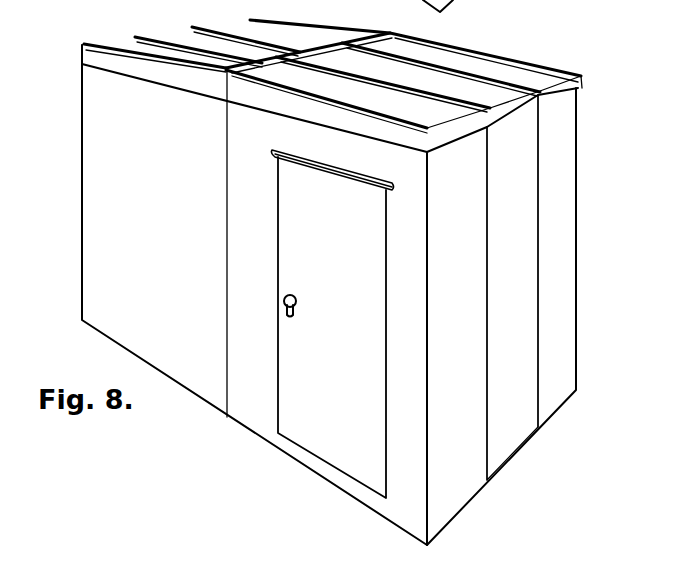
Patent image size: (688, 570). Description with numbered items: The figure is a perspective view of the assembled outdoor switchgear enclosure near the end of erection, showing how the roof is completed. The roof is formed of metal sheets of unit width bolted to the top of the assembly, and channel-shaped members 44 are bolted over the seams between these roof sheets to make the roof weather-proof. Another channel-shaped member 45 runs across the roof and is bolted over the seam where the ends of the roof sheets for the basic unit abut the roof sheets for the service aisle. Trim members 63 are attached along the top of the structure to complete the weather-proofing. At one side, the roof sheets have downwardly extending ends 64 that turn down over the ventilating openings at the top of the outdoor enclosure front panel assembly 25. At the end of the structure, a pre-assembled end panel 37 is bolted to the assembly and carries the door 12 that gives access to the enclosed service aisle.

The door 12 is at (327, 452).
The outdoor enclosure front panel assembly 25 is at (522, 257).
The end panel 37 is at (250, 412).
The channel-shaped member 44 is at (150, 37).
The channel-shaped member 45 is at (260, 65).
The trim member 63 is at (82, 55).
The downwardly extending end 64 is at (581, 88).